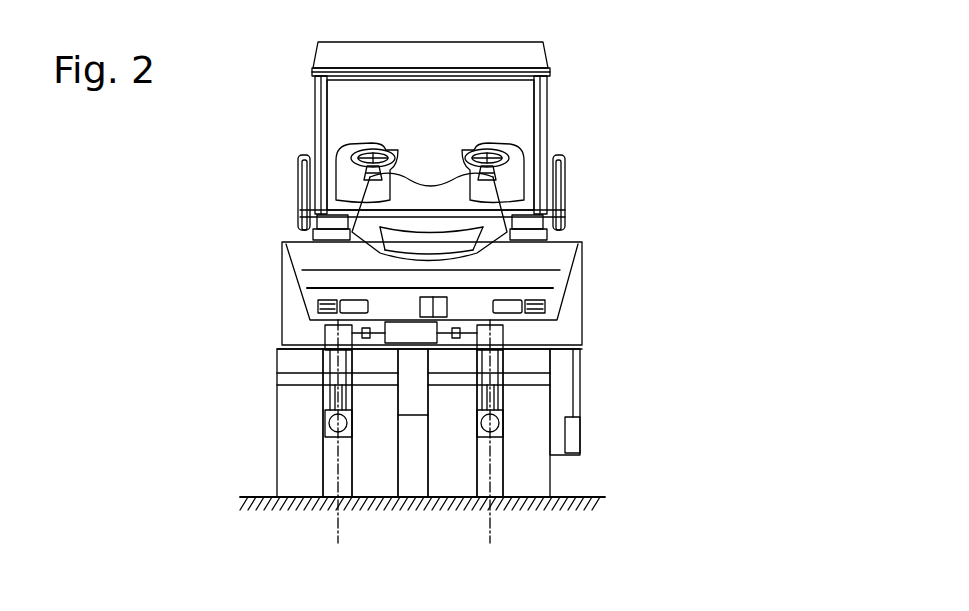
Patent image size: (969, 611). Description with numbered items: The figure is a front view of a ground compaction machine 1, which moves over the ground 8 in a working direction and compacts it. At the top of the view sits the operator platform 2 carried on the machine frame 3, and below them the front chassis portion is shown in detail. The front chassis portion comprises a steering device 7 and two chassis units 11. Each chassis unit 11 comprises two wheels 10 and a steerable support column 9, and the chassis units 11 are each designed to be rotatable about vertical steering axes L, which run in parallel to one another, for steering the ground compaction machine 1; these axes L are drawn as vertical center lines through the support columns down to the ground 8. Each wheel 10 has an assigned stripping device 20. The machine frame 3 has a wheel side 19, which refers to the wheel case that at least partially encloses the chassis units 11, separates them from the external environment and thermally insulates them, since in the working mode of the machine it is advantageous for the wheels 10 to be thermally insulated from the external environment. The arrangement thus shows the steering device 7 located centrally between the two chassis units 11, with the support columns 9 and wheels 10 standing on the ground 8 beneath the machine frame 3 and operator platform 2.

The ground compaction machine 1 is at (622, 158).
The operator platform 2 is at (377, 125).
The machine frame 3 is at (535, 253).
The steering device 7 is at (402, 318).
The ground 8 is at (422, 500).
The steerable support column 9 is at (320, 328).
The wheel 10 is at (320, 450).
The chassis unit 11 is at (300, 403).
The wheel side 19 is at (543, 337).
The stripping device 20 is at (320, 368).
The vertical steering axis L is at (338, 522).